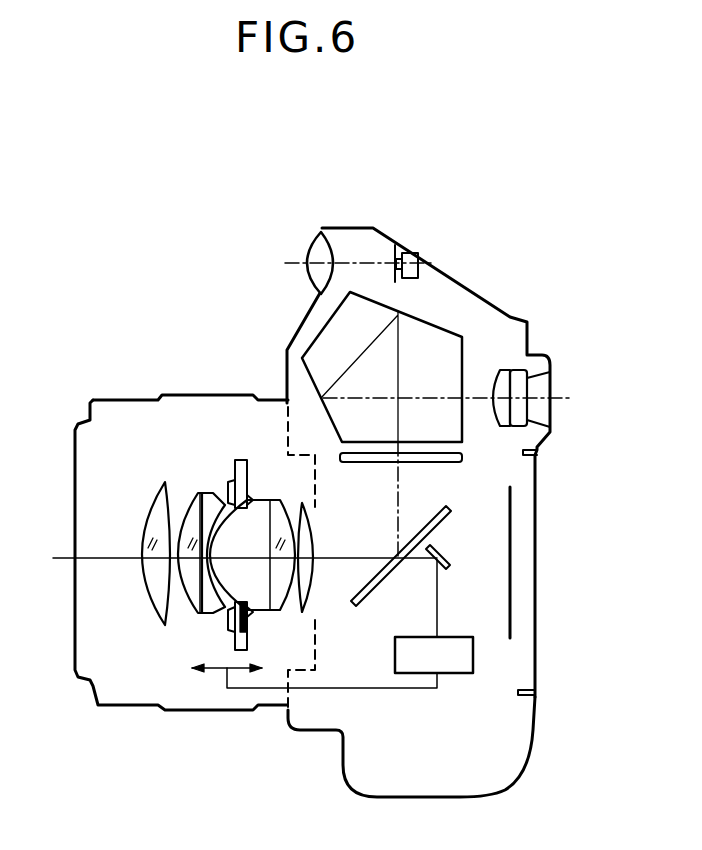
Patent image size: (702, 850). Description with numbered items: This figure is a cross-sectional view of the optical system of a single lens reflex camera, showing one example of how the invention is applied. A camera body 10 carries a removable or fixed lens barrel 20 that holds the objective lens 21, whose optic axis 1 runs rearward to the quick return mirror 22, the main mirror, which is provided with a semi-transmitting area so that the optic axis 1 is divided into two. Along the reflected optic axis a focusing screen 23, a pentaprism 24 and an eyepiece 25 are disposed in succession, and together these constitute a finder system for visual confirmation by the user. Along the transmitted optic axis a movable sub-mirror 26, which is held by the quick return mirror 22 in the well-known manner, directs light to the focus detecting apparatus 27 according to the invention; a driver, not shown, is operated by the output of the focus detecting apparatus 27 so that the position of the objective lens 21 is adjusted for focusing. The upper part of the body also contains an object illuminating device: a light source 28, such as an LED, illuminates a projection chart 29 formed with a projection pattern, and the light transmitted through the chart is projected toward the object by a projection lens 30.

The optic axis 1 is at (63, 562).
The camera body 10 is at (525, 658).
The lens barrel 20 is at (188, 702).
The objective lens 21 is at (215, 625).
The quick return mirror 22 is at (370, 595).
The focusing screen 23 is at (428, 462).
The pentaprism 24 is at (440, 343).
The eyepiece 25 is at (502, 370).
The movable sub-mirror 26 is at (440, 550).
The focus detecting apparatus 27 is at (457, 667).
The light source 28 is at (412, 254).
The projection chart 29 is at (393, 259).
The projection lens 30 is at (313, 248).